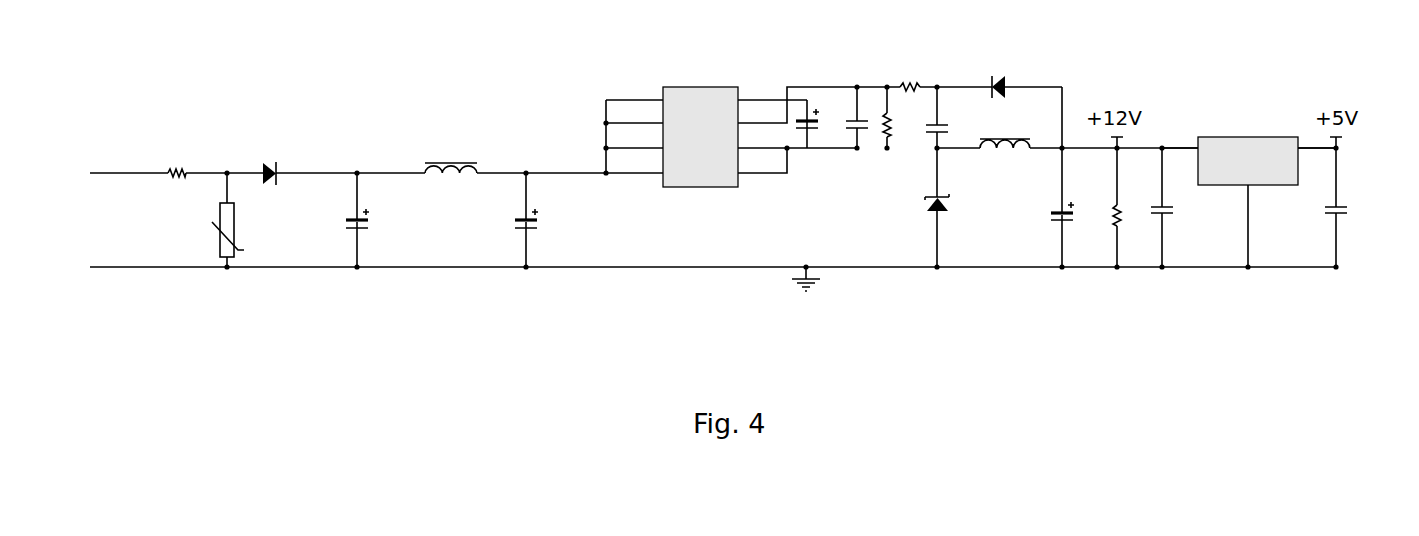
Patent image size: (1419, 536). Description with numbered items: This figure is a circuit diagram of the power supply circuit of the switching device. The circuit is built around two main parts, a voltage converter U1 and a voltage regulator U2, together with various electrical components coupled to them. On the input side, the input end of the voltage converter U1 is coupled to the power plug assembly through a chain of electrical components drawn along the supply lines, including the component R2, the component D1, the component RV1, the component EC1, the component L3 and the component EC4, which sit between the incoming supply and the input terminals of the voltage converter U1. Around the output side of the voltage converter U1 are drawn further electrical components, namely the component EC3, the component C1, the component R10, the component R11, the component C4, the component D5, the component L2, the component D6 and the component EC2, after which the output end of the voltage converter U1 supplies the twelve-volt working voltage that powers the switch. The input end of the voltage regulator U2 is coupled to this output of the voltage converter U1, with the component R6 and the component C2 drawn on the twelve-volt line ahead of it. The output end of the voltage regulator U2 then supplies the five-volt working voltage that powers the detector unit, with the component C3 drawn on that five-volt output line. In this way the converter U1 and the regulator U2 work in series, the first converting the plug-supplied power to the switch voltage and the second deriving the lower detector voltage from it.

The resistor R2 is at (183, 158).
The diode D1 is at (270, 157).
The varistor RV1 is at (245, 220).
The electrolytic capacitor EC1 is at (378, 220).
The inductor L3 is at (451, 155).
The electrolytic capacitor EC4 is at (547, 220).
The voltage converter U1 is at (731, 120).
The electrolytic capacitor EC3 is at (808, 138).
The capacitor C1 is at (858, 99).
The resistor R10 is at (891, 134).
The resistor R11 is at (897, 71).
The capacitor C4 is at (946, 117).
The diode D5 is at (999, 74).
The inductor L2 is at (1136, 155).
The zener diode D6 is at (951, 207).
The electrolytic capacitor EC2 is at (1043, 177).
The resistor R6 is at (1103, 207).
The capacitor C2 is at (1173, 207).
The voltage regulator U2 is at (1249, 186).
The capacitor C3 is at (1351, 207).